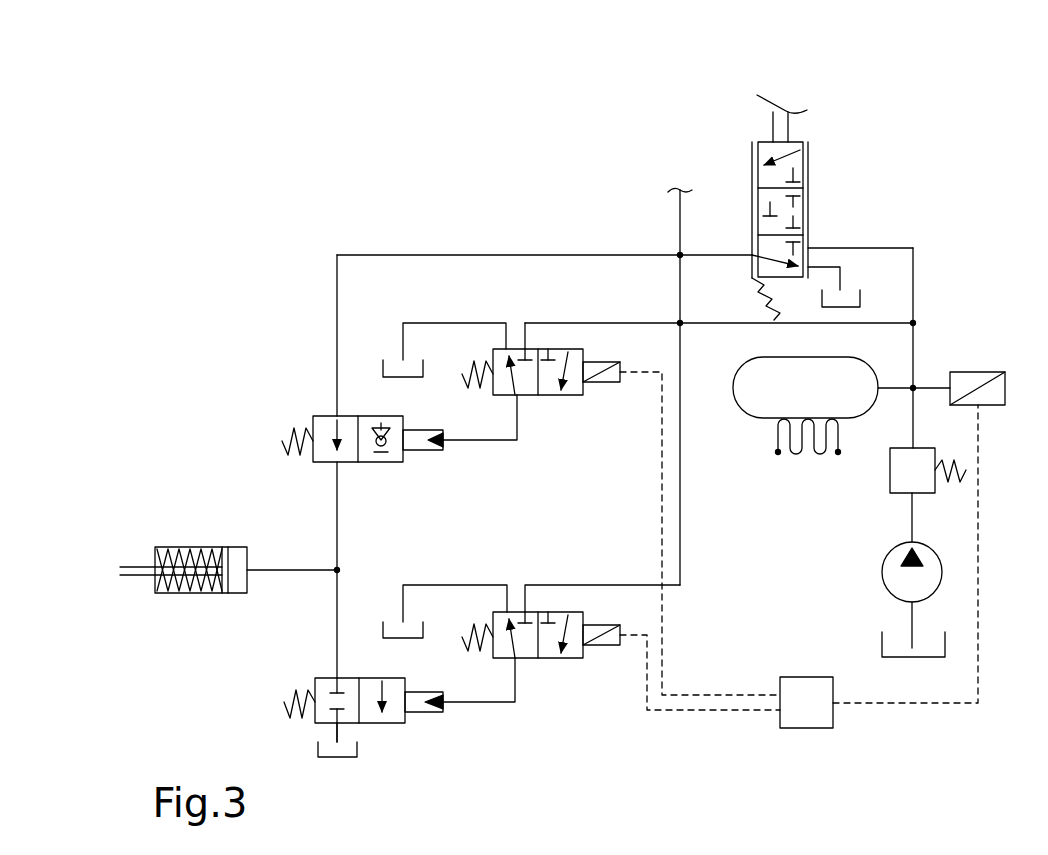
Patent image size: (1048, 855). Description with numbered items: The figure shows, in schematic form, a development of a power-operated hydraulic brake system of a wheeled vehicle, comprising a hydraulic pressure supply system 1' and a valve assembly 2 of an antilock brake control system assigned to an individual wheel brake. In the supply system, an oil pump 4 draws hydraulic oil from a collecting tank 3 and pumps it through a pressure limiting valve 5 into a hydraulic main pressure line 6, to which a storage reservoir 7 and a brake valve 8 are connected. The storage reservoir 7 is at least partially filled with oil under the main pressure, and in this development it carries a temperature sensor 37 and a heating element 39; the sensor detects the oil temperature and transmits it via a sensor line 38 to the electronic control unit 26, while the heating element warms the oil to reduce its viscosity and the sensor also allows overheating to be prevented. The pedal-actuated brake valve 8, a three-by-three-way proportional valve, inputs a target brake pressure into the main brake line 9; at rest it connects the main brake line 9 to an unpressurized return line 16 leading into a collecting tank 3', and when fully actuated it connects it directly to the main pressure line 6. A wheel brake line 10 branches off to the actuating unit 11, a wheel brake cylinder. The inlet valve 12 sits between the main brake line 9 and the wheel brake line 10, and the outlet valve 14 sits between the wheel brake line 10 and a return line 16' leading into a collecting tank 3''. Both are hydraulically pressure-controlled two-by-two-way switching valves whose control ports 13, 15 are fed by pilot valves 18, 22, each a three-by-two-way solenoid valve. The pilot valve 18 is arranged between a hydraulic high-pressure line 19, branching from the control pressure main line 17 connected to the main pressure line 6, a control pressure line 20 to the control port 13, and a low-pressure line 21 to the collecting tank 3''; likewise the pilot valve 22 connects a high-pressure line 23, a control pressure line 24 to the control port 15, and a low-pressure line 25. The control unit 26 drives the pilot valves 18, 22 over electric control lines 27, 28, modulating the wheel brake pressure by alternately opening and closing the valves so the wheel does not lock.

The hydraulic pressure supply system 1' is at (781, 556).
The valve assembly 2 is at (245, 293).
The collecting tank 3 is at (949, 629).
The collecting tank 3' is at (903, 283).
The collecting tank 3'' is at (322, 527).
The oil pump 4 is at (945, 577).
The pressure limiting valve 5 is at (928, 495).
The hydraulic main pressure line 6 is at (915, 357).
The storage reservoir 7 is at (841, 387).
The brake valve 8 is at (822, 204).
The main brake line 9 is at (720, 254).
The wheel brake line 10 is at (285, 568).
The actuating unit 11 is at (195, 546).
The inlet valve 12 is at (300, 412).
The control port 13 is at (418, 442).
The outlet valve 14 is at (300, 673).
The control port 15 is at (428, 696).
The return line 16 is at (882, 239).
The return line 16' is at (394, 745).
The hydraulic control pressure main line 17 is at (722, 322).
The pilot valve 18 is at (545, 412).
The hydraulic high-pressure line 19 is at (596, 321).
The control pressure line 20 is at (490, 442).
The hydraulic low-pressure line 21 is at (456, 321).
The pilot valve 22 is at (545, 675).
The hydraulic high-pressure line 23 is at (596, 583).
The control pressure line 24 is at (492, 704).
The hydraulic low-pressure line 25 is at (458, 583).
The electronic control unit 26 is at (835, 712).
The electric control line 27 is at (665, 638).
The electric control line 28 is at (745, 712).
The temperature sensor 37 is at (988, 408).
The sensor line 38 is at (978, 677).
The heating element 39 is at (776, 432).